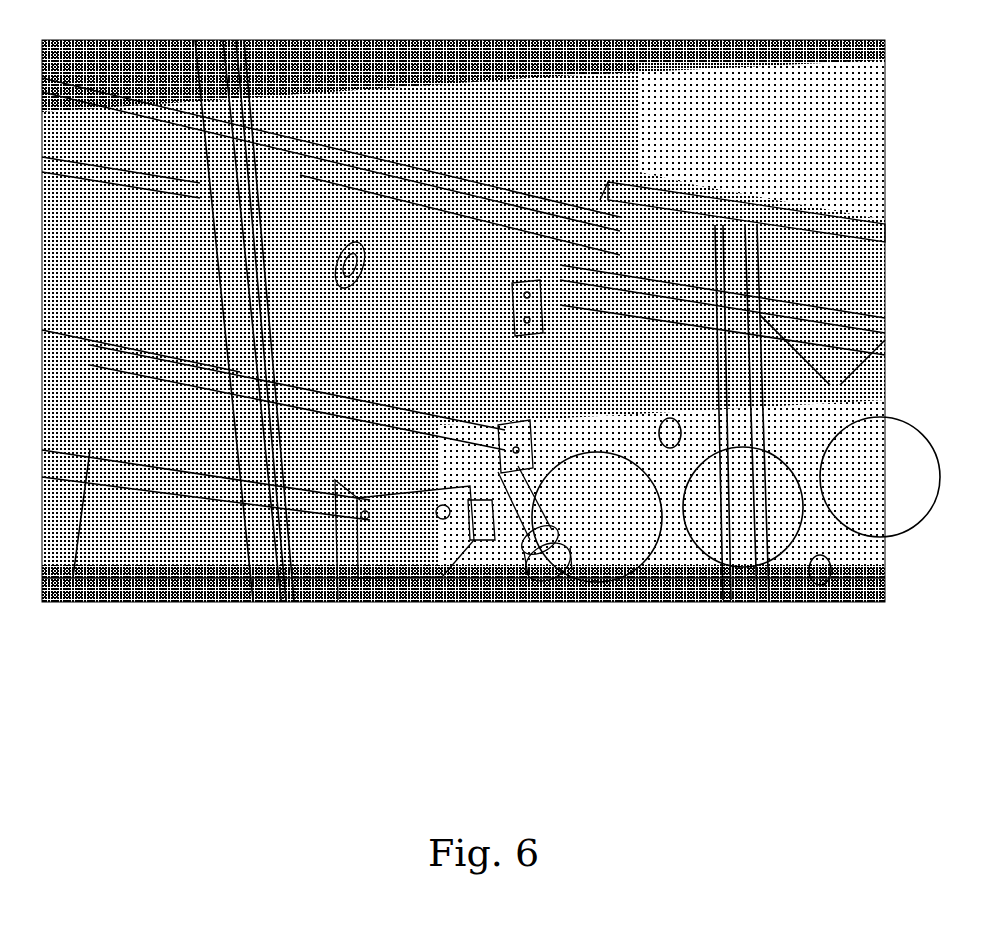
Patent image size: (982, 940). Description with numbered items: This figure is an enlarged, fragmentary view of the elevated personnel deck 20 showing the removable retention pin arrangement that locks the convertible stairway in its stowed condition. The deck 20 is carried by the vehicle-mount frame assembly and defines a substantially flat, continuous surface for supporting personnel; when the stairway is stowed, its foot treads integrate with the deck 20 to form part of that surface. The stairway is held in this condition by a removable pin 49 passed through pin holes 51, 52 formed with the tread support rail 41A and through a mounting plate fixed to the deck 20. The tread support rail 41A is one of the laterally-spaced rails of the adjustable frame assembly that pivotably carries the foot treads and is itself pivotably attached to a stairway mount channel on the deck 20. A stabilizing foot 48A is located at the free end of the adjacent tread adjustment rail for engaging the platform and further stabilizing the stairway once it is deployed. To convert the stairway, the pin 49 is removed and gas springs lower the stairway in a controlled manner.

The elevated personnel deck 20 is at (770, 172).
The removable pin 49 is at (385, 270).
The pin hole 52 is at (480, 306).
The pin hole 51 is at (510, 380).
The tread support rail 41A is at (333, 600).
The stabilizing foot 48A is at (505, 602).